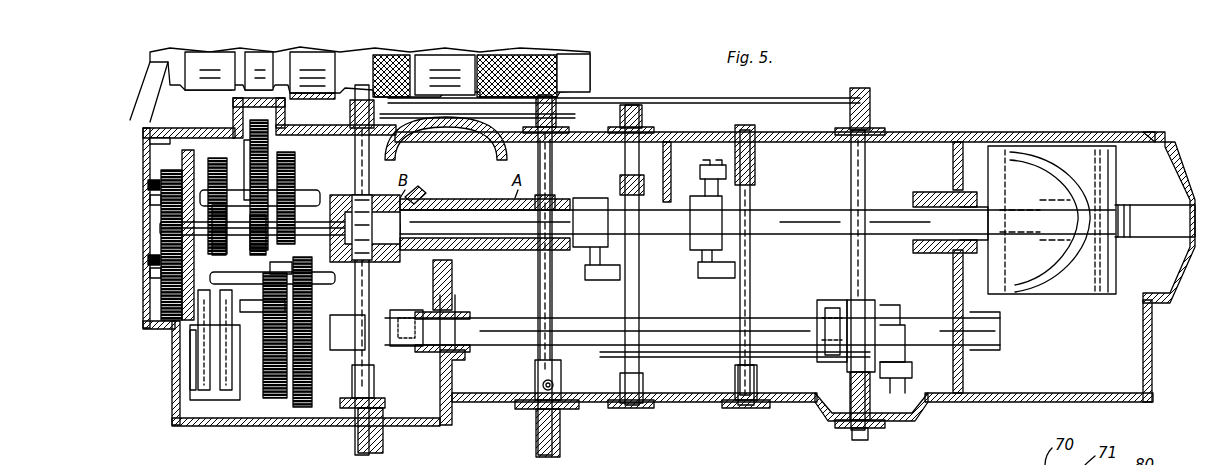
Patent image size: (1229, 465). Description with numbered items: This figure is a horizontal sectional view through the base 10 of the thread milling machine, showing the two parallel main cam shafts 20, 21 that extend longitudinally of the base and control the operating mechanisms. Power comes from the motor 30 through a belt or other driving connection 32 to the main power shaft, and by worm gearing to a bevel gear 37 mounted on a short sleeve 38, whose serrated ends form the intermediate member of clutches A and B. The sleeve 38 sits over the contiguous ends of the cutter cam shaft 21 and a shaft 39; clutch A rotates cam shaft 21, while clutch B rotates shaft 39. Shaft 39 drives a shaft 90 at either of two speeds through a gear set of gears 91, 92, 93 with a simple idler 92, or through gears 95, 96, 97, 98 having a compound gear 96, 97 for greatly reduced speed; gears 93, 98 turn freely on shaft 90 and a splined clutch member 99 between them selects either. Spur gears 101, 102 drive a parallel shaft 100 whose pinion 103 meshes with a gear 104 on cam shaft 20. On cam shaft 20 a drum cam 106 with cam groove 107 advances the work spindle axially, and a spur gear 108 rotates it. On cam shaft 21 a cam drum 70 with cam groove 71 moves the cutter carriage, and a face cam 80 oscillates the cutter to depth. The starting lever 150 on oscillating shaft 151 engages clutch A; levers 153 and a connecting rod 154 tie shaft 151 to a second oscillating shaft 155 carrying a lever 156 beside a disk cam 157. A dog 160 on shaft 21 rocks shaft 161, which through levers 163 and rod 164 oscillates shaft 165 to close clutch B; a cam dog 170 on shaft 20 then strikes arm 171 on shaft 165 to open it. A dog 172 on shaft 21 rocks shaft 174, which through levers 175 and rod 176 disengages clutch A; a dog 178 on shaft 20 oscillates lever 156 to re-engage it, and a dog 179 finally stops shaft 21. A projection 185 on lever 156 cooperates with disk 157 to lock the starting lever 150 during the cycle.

The base 10 is at (990, 132).
The main cam shaft 20 is at (570, 333).
The main cam shaft 21 is at (820, 210).
The motor 30 is at (560, 80).
The driving connection 32 is at (325, 99).
The bevel gear 37 is at (418, 197).
The short sleeve 38 is at (468, 198).
The shaft 39 is at (453, 252).
The cam drum 70 is at (1086, 292).
The cam groove 71 is at (1047, 292).
The face cam 80 is at (1106, 294).
The shaft 90 is at (318, 212).
The gear 91 is at (231, 230).
The idler 92 is at (188, 170).
The gear 93 is at (218, 158).
The gear 95 is at (260, 235).
The compound gear 96 is at (268, 115).
The compound gear 97 is at (294, 137).
The gear 98 is at (290, 327).
The clutch member 99 is at (250, 168).
The shaft 100 is at (272, 268).
The spur gear 101 is at (158, 180).
The spur gear 102 is at (160, 250).
The pinion 103 is at (300, 262).
The gear 104 is at (300, 300).
The drum cam 106 is at (192, 382).
The cam groove 107 is at (206, 415).
The spur gear 108 is at (268, 403).
The starting lever 150 is at (562, 451).
The oscillating shaft 151 is at (543, 285).
The levers 153 is at (537, 112).
The connecting rod 154 is at (808, 98).
The oscillating shaft 155 is at (864, 289).
The lever 156 is at (850, 396).
The disk cam 157 is at (838, 298).
The clutch operating dog 160 is at (588, 280).
The oscillatory shaft 161 is at (628, 353).
The levers 163 is at (372, 103).
The connecting rod 164 is at (590, 113).
The shaft 165 is at (360, 370).
The cam dog 170 is at (441, 372).
The clutch operating arm 171 is at (382, 416).
The dog 172 is at (706, 176).
The oscillating shaft 174 is at (750, 290).
The levers 175 is at (536, 372).
The connecting rod 176 is at (714, 372).
The clutch operating dog 178 is at (905, 378).
The dog 179 is at (716, 279).
The projection 185 is at (850, 383).